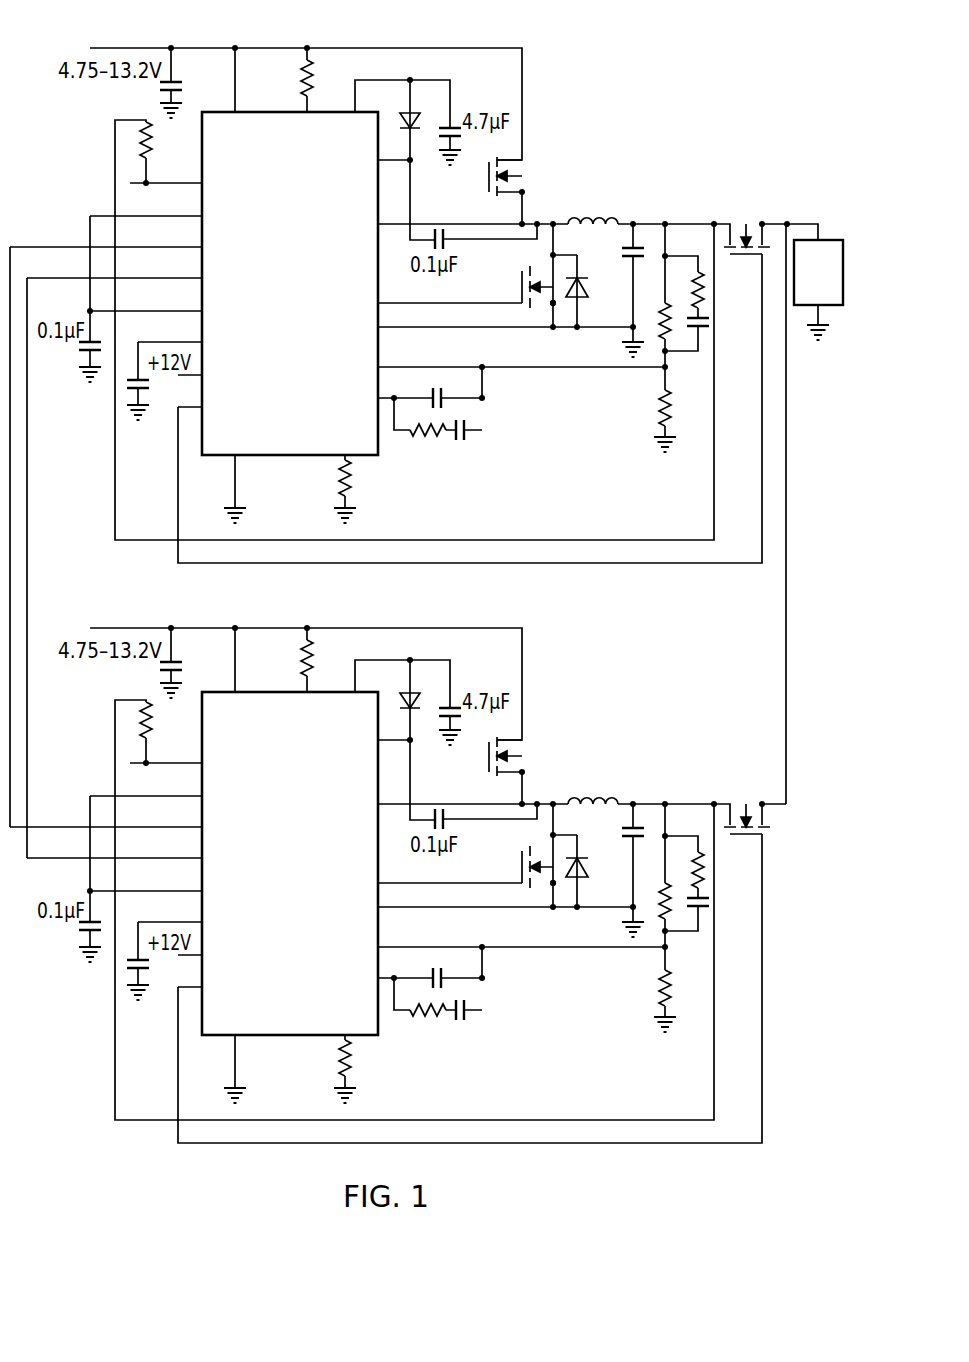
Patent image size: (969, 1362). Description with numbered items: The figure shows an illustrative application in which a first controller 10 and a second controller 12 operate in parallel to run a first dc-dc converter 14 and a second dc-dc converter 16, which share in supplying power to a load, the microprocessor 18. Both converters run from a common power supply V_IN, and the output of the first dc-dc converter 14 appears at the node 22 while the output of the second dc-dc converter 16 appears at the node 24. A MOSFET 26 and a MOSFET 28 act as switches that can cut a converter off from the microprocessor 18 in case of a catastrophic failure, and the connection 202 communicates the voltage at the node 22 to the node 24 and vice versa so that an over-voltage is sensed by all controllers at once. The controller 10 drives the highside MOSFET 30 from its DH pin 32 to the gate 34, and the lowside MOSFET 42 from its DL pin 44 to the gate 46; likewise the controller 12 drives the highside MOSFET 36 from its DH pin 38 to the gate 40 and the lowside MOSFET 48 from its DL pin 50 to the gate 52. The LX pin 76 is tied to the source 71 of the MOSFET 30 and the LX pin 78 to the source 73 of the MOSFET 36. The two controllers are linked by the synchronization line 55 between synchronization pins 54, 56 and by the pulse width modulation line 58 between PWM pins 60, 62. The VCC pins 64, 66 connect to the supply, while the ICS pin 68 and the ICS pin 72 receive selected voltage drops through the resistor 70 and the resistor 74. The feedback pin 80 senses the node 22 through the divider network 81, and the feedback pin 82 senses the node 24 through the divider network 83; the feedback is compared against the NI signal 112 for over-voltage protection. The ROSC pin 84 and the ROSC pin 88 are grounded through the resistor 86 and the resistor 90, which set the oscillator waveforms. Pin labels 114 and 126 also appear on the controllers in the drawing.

The first controller 10 is at (258, 114).
The second controller 12 is at (290, 846).
The first dc-dc converter 14 is at (672, 146).
The second dc-dc converter 16 is at (660, 714).
The microprocessor 18 is at (820, 218).
The output node of first dc-dc converter 22 is at (713, 218).
The output node of second dc-dc converter 24 is at (709, 782).
The MOSFET 26 is at (748, 218).
The MOSFET 28 is at (747, 795).
The highside MOSFET 30 is at (529, 167).
The DH pin 32 is at (343, 191).
The gate 34 is at (487, 170).
The highside MOSFET 36 is at (539, 752).
The DH pin 38 is at (343, 780).
The gate 40 is at (523, 737).
The lowside MOSFET 42 is at (541, 307).
The DL pin 44 is at (353, 291).
The gate 46 is at (521, 287).
The lowside MOSFET 48 is at (533, 933).
The DL pin 50 is at (344, 870).
The gate 52 is at (507, 867).
The synchronization pin 54 is at (258, 280).
The synchronization line 55 is at (28, 440).
The synchronization pin 56 is at (257, 858).
The pulse width modulation line 58 is at (38, 246).
The pulse width modulation pin 60 is at (250, 247).
The pulse width modulation pin 62 is at (257, 826).
The VCC pin 64 is at (216, 145).
The VCC pin 66 is at (230, 726).
The ICS pin 68 is at (283, 145).
The resistor 70 is at (316, 79).
The source 71 is at (529, 196).
The ICS pin 72 is at (300, 726).
The source 73 is at (550, 783).
The resistor 74 is at (332, 660).
The LX pin 76 is at (351, 235).
The LX pin 78 is at (344, 812).
The feedback pin 80 is at (346, 367).
The divider network 81 is at (693, 357).
The feedback pin 82 is at (336, 950).
The divider network 83 is at (688, 944).
The ROSC pin 84 is at (312, 438).
The resistor 86 is at (357, 489).
The ROSC pin 88 is at (317, 1019).
The resistor 90 is at (371, 1060).
The NI signal 112 is at (233, 313).
The first reference voltage output VREF 114 is at (245, 213).
The second noninverting input NI 126 is at (250, 888).
The connection 202 is at (788, 630).